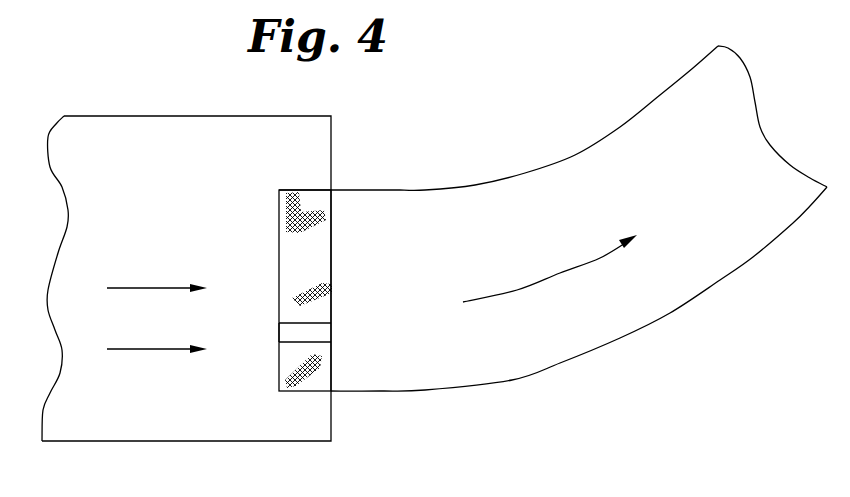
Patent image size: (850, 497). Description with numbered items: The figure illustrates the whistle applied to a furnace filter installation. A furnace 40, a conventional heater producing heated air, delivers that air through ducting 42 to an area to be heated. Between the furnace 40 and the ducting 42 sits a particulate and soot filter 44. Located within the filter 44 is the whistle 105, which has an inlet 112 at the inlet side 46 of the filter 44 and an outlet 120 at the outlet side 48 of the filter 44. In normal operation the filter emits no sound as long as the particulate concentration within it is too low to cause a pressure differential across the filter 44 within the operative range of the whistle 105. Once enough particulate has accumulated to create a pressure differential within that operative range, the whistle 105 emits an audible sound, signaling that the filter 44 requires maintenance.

The furnace 40 is at (222, 90).
The ducting 42 is at (510, 380).
The particulate and soot filter 44 is at (310, 380).
The inlet side of filter 46 is at (278, 226).
The outlet side of filter 48 is at (333, 228).
The whistle 105 is at (315, 344).
The inlet 112 is at (278, 335).
The outlet 120 is at (333, 331).